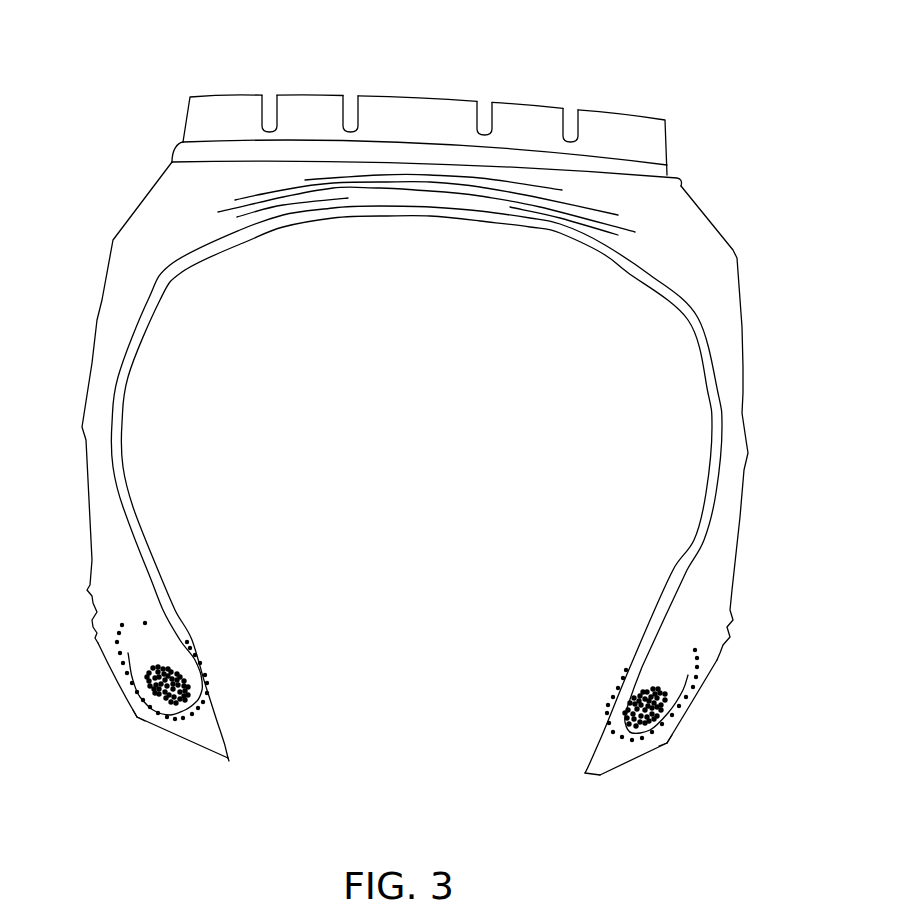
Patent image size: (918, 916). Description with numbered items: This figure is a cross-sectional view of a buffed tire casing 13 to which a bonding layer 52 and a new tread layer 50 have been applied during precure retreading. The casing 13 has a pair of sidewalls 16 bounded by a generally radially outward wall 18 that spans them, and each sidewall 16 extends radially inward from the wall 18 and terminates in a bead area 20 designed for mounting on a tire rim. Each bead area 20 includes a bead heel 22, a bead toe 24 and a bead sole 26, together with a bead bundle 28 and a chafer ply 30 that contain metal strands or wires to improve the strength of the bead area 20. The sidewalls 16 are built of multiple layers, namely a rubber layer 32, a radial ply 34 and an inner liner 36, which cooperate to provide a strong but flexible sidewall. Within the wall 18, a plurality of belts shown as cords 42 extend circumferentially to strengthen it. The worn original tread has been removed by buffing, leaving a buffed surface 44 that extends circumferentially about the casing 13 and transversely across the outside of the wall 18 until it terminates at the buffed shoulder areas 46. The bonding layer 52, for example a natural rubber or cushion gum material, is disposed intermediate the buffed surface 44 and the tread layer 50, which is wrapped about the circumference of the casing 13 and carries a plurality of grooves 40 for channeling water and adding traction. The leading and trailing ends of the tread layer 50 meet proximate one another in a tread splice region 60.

The tire casing 13 is at (750, 278).
The sidewalls 16 is at (110, 523).
The radially outward wall 18 is at (392, 203).
The bead area 20 is at (140, 644).
The bead heel 22 is at (137, 719).
The bead toe 24 is at (230, 762).
The bead sole 26 is at (182, 747).
The bead bundle 28 is at (193, 697).
The chafer ply 30 is at (197, 670).
The rubber layer 32 is at (108, 497).
The radial ply 34 is at (113, 400).
The inner liner 36 is at (160, 567).
The grooves 40 is at (347, 103).
The cords 42 is at (367, 190).
The buffed surface 44 is at (338, 163).
The buffed shoulder areas 46 is at (155, 183).
The tread layer 50 is at (203, 103).
The bonding layer 52 is at (177, 150).
The tread splice region 60 is at (523, 122).